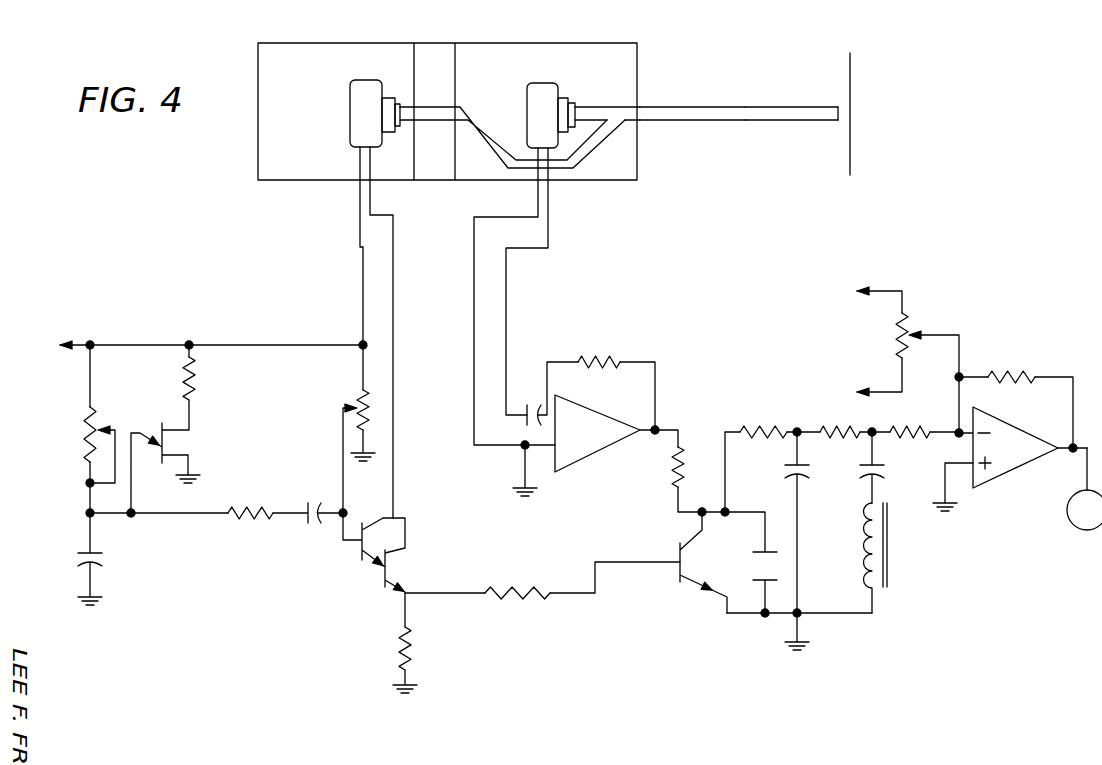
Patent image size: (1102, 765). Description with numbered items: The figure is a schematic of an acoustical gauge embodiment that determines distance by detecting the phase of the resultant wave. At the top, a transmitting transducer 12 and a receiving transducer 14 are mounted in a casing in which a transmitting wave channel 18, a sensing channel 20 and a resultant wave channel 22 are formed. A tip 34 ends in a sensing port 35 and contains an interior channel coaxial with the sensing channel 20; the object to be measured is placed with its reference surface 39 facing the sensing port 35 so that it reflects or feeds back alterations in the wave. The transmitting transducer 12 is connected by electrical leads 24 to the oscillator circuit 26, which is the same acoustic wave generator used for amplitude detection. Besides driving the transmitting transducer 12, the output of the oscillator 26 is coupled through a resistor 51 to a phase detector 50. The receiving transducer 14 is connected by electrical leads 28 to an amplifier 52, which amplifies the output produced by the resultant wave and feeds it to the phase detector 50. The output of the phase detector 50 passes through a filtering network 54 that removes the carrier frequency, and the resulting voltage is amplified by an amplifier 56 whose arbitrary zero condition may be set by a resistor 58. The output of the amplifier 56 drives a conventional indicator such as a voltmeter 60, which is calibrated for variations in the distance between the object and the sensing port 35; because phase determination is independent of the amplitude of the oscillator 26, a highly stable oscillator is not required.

The transmitting transducer 12 is at (367, 100).
The receiving transducer 14 is at (545, 92).
The transmitting wave channel 18 is at (470, 124).
The sensing channel 20 is at (712, 120).
The resultant wave channel 22 is at (583, 111).
The electrical leads 24 is at (393, 251).
The oscillator circuit 26 is at (210, 337).
The electrical leads 28 is at (506, 306).
The tip 34 is at (769, 121).
The sensing port 35 is at (840, 118).
The reference surface 39 is at (850, 62).
The phase detector 50 is at (702, 578).
The resistor 51 is at (500, 583).
The amplifier 52 is at (612, 440).
The filtering network 54 is at (788, 425).
The amplifier 56 is at (1017, 467).
The resistor 58 is at (905, 321).
The voltmeter 60 is at (1067, 518).